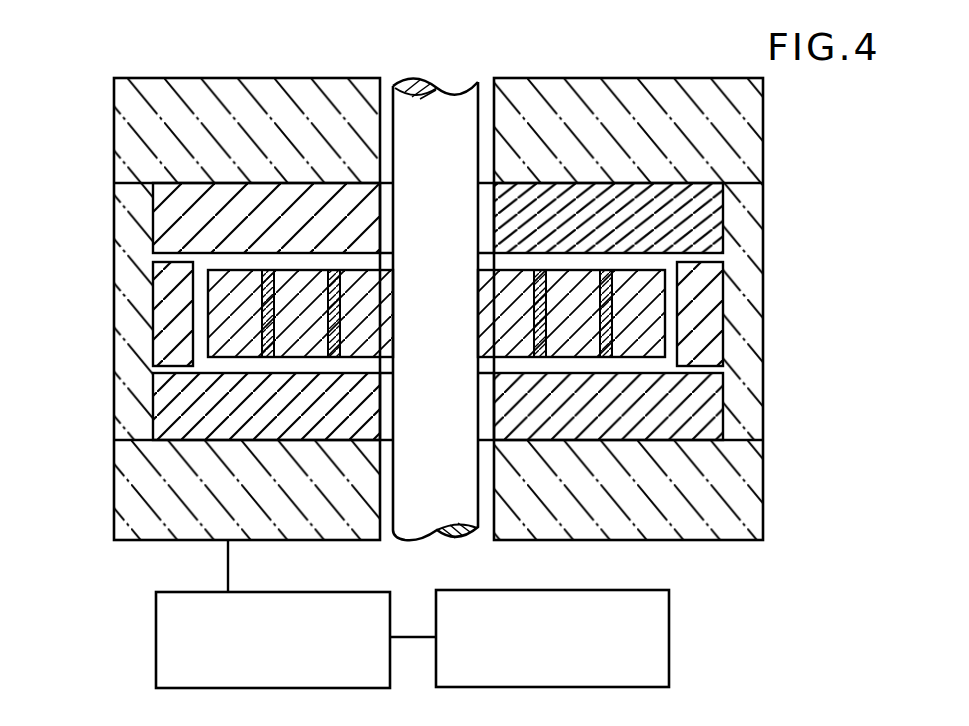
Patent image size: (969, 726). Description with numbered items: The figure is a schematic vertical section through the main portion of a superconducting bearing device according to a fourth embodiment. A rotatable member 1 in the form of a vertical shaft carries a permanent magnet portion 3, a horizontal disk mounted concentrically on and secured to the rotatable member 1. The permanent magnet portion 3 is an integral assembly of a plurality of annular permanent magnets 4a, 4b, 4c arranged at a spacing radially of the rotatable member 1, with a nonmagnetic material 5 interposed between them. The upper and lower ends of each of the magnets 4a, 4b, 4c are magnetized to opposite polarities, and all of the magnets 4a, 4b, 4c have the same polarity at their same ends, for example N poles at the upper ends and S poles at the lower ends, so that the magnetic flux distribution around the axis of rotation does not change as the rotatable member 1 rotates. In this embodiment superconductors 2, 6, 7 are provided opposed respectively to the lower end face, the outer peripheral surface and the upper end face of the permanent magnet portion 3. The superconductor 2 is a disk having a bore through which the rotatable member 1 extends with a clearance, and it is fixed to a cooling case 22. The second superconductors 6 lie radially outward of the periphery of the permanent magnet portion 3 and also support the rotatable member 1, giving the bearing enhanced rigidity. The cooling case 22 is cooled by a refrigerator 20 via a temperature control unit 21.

The rotatable member 1 is at (410, 532).
The superconductor 2 is at (168, 398).
The permanent magnet portion 3 is at (427, 232).
The annular permanent magnet 4a is at (521, 275).
The annular permanent magnet 4b is at (592, 275).
The annular permanent magnet 4c is at (657, 275).
The nonmagnetic material 5 is at (335, 275).
The second superconductor 6 is at (168, 305).
The superconductor 7 is at (167, 218).
The refrigerator 20 is at (657, 637).
The temperature control unit 21 is at (156, 637).
The cooling case 22 is at (670, 540).